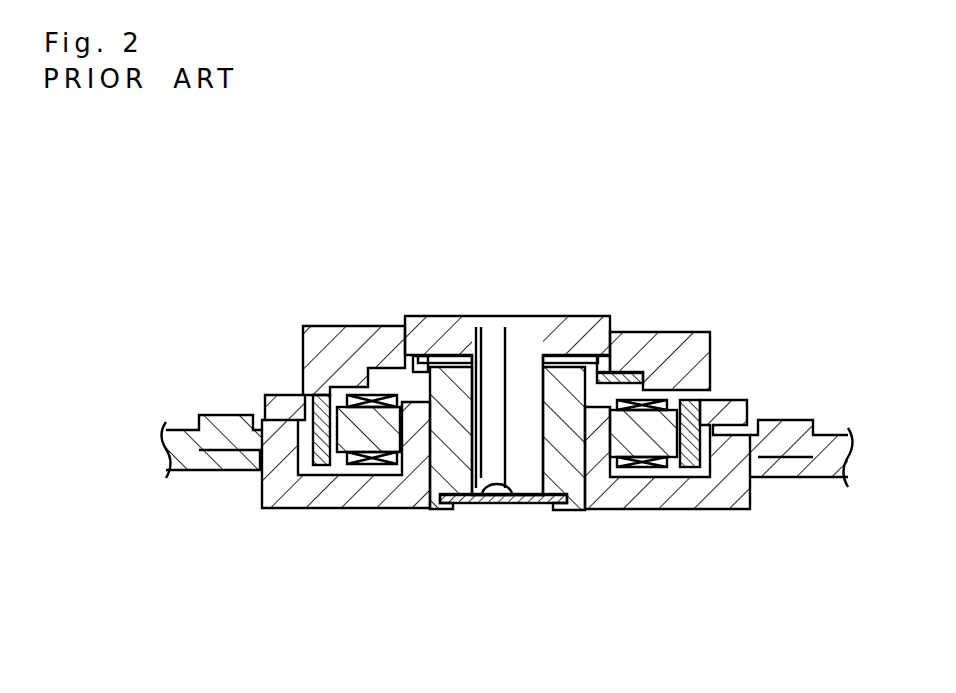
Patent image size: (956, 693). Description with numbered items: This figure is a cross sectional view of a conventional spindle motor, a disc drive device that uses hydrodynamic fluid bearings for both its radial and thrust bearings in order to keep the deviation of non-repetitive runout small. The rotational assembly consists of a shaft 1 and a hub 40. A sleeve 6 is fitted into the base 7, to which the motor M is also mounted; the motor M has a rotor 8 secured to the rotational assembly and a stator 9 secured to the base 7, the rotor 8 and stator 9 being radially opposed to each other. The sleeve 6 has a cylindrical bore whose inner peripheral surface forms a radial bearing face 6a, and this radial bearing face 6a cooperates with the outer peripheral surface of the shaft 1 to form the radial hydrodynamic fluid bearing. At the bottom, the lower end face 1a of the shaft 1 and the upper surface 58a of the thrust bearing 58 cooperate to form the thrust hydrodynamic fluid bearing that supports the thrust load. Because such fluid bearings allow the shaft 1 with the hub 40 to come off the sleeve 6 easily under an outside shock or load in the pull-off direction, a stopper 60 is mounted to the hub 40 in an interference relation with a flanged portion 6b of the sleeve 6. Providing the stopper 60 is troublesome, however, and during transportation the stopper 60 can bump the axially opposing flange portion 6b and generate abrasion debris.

The shaft 1 is at (517, 335).
The lower end face of the shaft 1a is at (525, 503).
The sleeve 6 is at (447, 440).
The radial bearing face 6a is at (487, 382).
The flanged portion of the sleeve 6b is at (425, 358).
The base 7 is at (293, 498).
The rotor 8 is at (688, 443).
The stator 9 is at (638, 443).
The hub 40 is at (702, 333).
The thrust bearing 58 is at (470, 497).
The upper surface of the thrust bearing 58a is at (512, 505).
The stopper 60 is at (630, 372).
The motor M is at (538, 520).